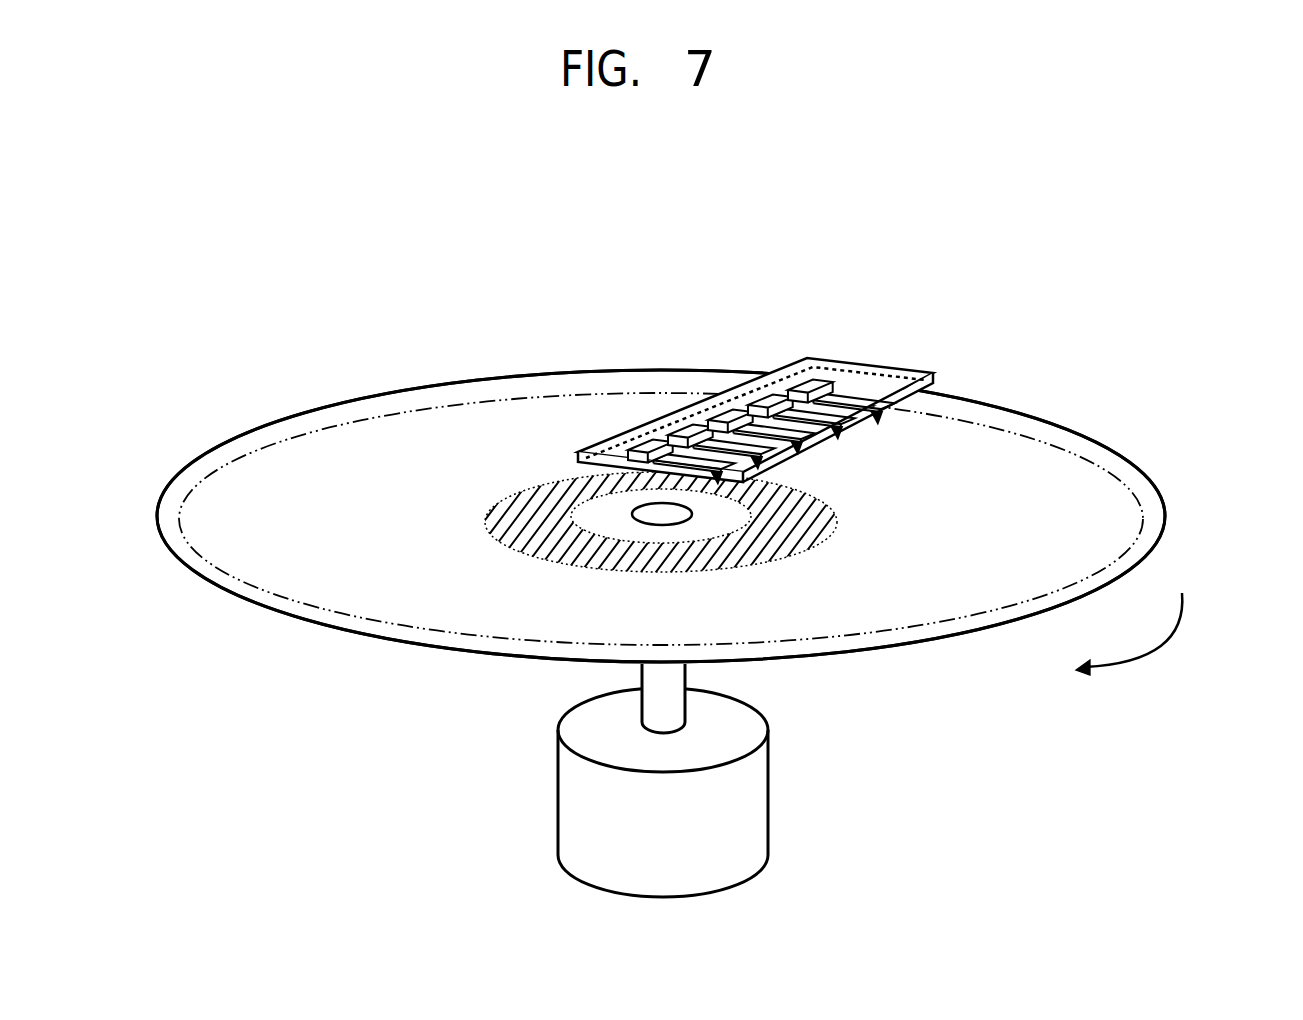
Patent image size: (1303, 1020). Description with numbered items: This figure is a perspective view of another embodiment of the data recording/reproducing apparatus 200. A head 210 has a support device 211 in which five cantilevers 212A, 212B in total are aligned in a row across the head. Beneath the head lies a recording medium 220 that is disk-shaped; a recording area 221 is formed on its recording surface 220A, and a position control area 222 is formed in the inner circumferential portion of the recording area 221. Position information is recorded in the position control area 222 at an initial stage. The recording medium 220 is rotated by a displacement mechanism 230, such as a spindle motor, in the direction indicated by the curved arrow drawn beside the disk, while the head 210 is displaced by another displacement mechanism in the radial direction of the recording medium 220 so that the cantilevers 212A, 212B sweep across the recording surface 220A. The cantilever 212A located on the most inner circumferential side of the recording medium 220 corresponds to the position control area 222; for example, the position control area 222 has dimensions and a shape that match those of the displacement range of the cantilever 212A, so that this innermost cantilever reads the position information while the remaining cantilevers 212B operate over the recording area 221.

The data recording/reproducing apparatus 200 is at (708, 546).
The head 210 is at (811, 392).
The support device 211 is at (935, 374).
The cantilever 212A is at (662, 440).
The cantilever 212B is at (888, 385).
The recording medium 220 is at (699, 537).
The recording surface 220A is at (332, 563).
The recording area 221 is at (433, 447).
The position control area 222 is at (570, 560).
The displacement mechanism 230 is at (768, 785).